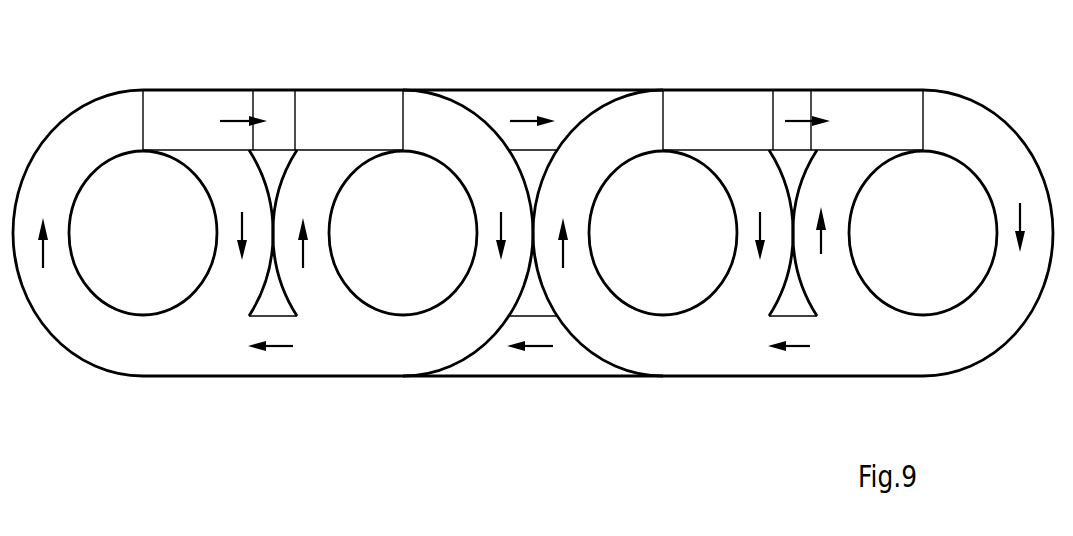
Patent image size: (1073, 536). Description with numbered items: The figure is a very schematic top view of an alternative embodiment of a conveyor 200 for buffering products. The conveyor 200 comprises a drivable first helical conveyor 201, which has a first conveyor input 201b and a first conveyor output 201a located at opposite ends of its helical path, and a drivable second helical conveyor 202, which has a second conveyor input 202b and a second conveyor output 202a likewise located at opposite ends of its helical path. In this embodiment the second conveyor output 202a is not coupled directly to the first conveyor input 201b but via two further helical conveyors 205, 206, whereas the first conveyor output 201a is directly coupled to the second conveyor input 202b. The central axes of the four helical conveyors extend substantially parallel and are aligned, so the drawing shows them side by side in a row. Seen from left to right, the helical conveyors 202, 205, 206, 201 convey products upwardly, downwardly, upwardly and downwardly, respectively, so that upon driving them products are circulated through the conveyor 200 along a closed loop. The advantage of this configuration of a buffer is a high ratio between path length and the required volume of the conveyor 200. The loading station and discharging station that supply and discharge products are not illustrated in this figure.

The conveyor 200 is at (940, 388).
The first helical conveyor 201 is at (979, 122).
The first conveyor output 201a is at (789, 352).
The first conveyor input 201b is at (777, 127).
The second helical conveyor 202 is at (75, 137).
The second conveyor output 202a is at (272, 125).
The second conveyor input 202b is at (275, 362).
The further helical conveyor 205 is at (447, 128).
The further helical conveyor 206 is at (613, 123).